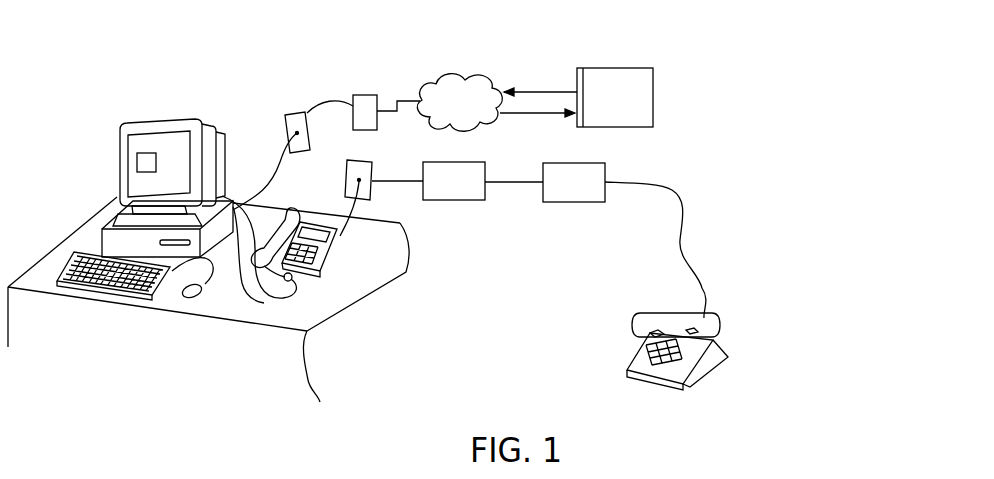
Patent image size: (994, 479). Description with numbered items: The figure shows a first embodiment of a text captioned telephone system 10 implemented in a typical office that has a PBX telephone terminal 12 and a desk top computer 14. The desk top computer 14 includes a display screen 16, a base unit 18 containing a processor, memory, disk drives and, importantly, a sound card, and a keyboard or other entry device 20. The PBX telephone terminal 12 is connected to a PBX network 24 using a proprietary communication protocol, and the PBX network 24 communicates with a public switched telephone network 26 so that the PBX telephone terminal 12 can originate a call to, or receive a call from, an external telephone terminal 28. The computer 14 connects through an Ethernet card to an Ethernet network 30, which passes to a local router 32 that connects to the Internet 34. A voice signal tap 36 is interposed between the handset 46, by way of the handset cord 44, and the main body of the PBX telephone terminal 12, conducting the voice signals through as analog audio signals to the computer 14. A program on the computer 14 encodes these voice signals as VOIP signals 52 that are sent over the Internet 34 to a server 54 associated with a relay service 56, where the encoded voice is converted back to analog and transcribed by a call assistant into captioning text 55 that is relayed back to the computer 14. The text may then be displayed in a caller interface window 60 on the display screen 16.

The text captioned telephone system 10 is at (114, 76).
The PBX telephone terminal 12 is at (407, 272).
The desk top computer 14 is at (68, 188).
The display screen 16 is at (152, 124).
The base unit 18 is at (102, 239).
The keyboard or other entry device 20 is at (182, 296).
The PBX network 24 is at (452, 201).
The public switched telephone network 26 is at (575, 204).
The external telephone terminal 28 is at (654, 315).
The Ethernet network 30 is at (273, 178).
The local router 32 is at (365, 95).
The Internet 34 is at (456, 90).
The voice signal tap 36 is at (292, 278).
The handset cord 44 is at (253, 297).
The handset 46 is at (302, 216).
The VOIP signals 52 is at (557, 120).
The server 54 is at (580, 66).
The captioning text 55 is at (569, 88).
The relay service 56 is at (628, 67).
The caller interface window 60 is at (143, 166).